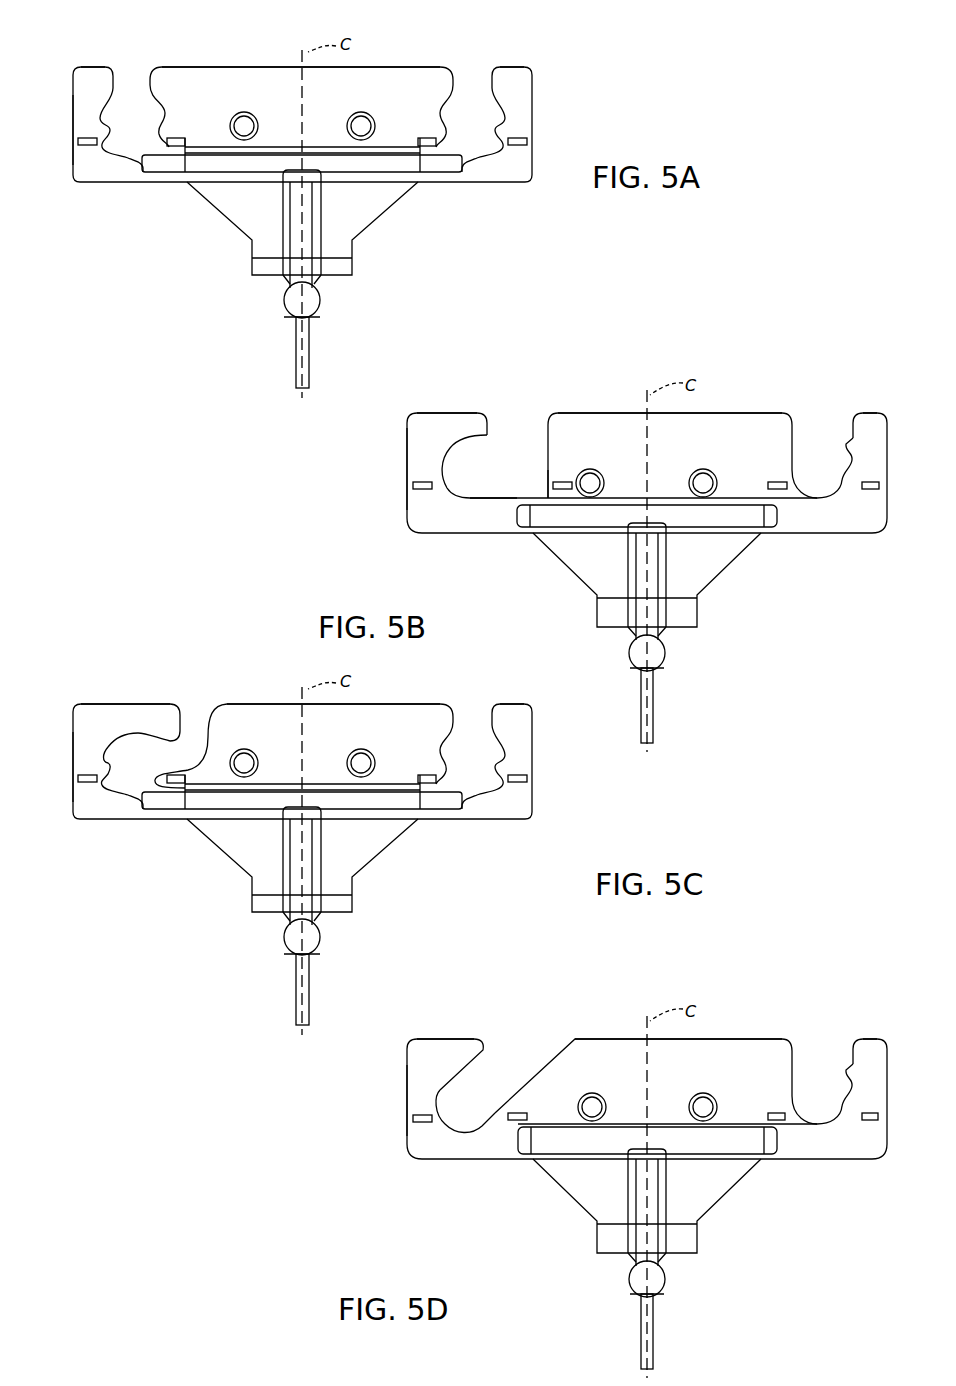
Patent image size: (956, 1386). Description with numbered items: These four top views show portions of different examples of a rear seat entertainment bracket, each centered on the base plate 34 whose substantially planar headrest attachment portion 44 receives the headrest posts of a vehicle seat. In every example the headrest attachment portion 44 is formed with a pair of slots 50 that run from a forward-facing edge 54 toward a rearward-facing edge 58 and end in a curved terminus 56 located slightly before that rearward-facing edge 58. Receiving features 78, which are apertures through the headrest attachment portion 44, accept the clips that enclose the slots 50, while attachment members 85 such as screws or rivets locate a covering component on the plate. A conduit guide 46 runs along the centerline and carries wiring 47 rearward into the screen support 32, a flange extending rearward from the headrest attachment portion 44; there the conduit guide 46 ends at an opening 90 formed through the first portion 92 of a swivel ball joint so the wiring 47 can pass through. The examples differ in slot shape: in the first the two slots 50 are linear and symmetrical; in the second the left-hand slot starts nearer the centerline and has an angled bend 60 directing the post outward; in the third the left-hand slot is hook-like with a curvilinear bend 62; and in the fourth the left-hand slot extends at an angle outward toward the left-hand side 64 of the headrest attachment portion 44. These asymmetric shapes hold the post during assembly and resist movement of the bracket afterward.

In FIG. 5A, the screen support 32 is at (340, 300).
In FIG. 5B, the screen support 32 is at (680, 653).
In FIG. 5C, the screen support 32 is at (350, 926).
In FIG. 5D, the screen support 32 is at (697, 1268).
In FIG. 5A, the base plate 34 is at (405, 48).
In FIG. 5B, the base plate 34 is at (750, 395).
In FIG. 5C, the base plate 34 is at (338, 678).
In FIG. 5D, the base plate 34 is at (685, 1013).
In FIG. 5A, the headrest attachment portion 44 is at (250, 88).
In FIG. 5B, the headrest attachment portion 44 is at (592, 432).
In FIG. 5C, the headrest attachment portion 44 is at (319, 790).
In FIG. 5D, the headrest attachment portion 44 is at (668, 1128).
In FIG. 5A, the conduit guide 46 is at (290, 160).
In FIG. 5B, the conduit guide 46 is at (660, 515).
In FIG. 5C, the conduit guide 46 is at (307, 831).
In FIG. 5D, the conduit guide 46 is at (653, 1176).
In FIG. 5A, the wiring 47 is at (312, 345).
In FIG. 5B, the wiring 47 is at (655, 700).
In FIG. 5C, the wiring 47 is at (336, 989).
In FIG. 5D, the wiring 47 is at (681, 1331).
In FIG. 5A, the slots 50 is at (133, 128).
In FIG. 5B, the slots 50 is at (472, 478).
In FIG. 5C, the slots 50 is at (305, 783).
In FIG. 5D, the slots 50 is at (650, 1119).
In FIG. 5A, the forward-facing edge 54 is at (192, 67).
In FIG. 5B, the forward-facing edge 54 is at (463, 413).
In FIG. 5C, the forward-facing edge 54 is at (302, 682).
In FIG. 5D, the forward-facing edge 54 is at (639, 1016).
In FIG. 5A, the curved terminus 56 is at (100, 122).
In FIG. 5B, the curved terminus 56 is at (440, 467).
In FIG. 5C, the curved terminus 56 is at (297, 755).
In FIG. 5D, the curved terminus 56 is at (641, 1085).
In FIG. 5A, the rearward-facing edge 58 is at (160, 183).
In FIG. 5B, the rearward-facing edge 58 is at (500, 533).
In FIG. 5C, the rearward-facing edge 58 is at (302, 833).
In FIG. 5D, the rearward-facing edge 58 is at (647, 1175).
In FIG. 5B, the angled bend 60 is at (545, 490).
In FIG. 5C, the curvilinear bend 62 is at (191, 737).
In FIG. 5A, the left-hand side 64 is at (73, 95).
In FIG. 5B, the left-hand side 64 is at (407, 428).
In FIG. 5C, the left-hand side 64 is at (61, 737).
In FIG. 5D, the left-hand side 64 is at (373, 1100).
In FIG. 5A, the receiving features 78 is at (80, 142).
In FIG. 5B, the receiving features 78 is at (413, 485).
In FIG. 5C, the receiving features 78 is at (302, 765).
In FIG. 5D, the receiving features 78 is at (647, 1100).
In FIG. 5A, the attachment members 85 is at (244, 126).
In FIG. 5B, the attachment members 85 is at (590, 483).
In FIG. 5C, the attachment members 85 is at (319, 752).
In FIG. 5D, the attachment members 85 is at (666, 1094).
In FIG. 5A, the opening 90 is at (295, 320).
In FIG. 5B, the opening 90 is at (640, 672).
In FIG. 5C, the opening 90 is at (283, 973).
In FIG. 5D, the opening 90 is at (627, 1314).
In FIG. 5A, the first portion of the swivel ball joint 92 is at (292, 300).
In FIG. 5B, the first portion of the swivel ball joint 92 is at (637, 652).
In FIG. 5C, the first portion of the swivel ball joint 92 is at (275, 937).
In FIG. 5D, the first portion of the swivel ball joint 92 is at (621, 1279).